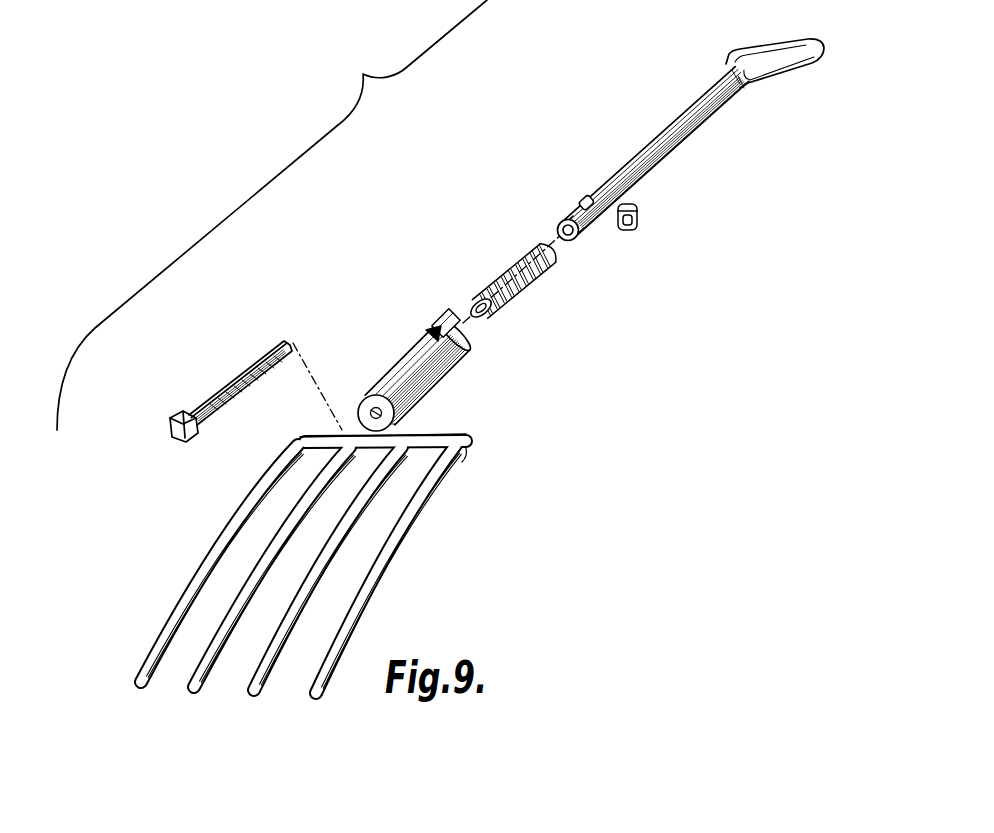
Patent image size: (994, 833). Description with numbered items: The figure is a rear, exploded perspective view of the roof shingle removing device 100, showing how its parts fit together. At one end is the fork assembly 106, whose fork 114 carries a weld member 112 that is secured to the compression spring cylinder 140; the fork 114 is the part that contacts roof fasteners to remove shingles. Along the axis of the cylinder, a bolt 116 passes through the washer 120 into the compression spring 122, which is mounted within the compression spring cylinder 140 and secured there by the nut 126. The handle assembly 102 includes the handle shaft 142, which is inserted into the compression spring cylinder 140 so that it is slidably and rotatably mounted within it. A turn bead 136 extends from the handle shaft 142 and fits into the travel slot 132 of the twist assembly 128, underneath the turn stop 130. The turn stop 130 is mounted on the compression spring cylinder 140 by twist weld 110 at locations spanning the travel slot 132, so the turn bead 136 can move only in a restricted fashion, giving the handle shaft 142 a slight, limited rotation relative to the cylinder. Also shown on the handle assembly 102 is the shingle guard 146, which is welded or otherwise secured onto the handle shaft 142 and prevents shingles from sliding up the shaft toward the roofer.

The roof shingle removing device 100 is at (362, 74).
The handle assembly 102 is at (650, 118).
The fork assembly 106 is at (465, 482).
The twist weld 110 is at (564, 222).
The weld member 112 is at (452, 378).
The fork 114 is at (453, 459).
The bolt 116 is at (237, 380).
The washer 120 is at (365, 397).
The compression spring 122 is at (488, 280).
The nut 126 is at (571, 242).
The twist assembly 128 is at (408, 320).
The turn stop 130 is at (452, 316).
The travel slot 132 is at (430, 335).
The turn bead 136 is at (585, 200).
The compression spring cylinder 140 is at (445, 402).
The handle shaft 142 is at (668, 165).
The shingle guard 146 is at (638, 212).